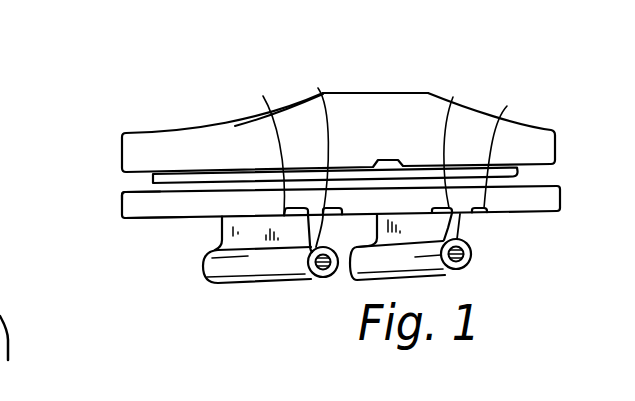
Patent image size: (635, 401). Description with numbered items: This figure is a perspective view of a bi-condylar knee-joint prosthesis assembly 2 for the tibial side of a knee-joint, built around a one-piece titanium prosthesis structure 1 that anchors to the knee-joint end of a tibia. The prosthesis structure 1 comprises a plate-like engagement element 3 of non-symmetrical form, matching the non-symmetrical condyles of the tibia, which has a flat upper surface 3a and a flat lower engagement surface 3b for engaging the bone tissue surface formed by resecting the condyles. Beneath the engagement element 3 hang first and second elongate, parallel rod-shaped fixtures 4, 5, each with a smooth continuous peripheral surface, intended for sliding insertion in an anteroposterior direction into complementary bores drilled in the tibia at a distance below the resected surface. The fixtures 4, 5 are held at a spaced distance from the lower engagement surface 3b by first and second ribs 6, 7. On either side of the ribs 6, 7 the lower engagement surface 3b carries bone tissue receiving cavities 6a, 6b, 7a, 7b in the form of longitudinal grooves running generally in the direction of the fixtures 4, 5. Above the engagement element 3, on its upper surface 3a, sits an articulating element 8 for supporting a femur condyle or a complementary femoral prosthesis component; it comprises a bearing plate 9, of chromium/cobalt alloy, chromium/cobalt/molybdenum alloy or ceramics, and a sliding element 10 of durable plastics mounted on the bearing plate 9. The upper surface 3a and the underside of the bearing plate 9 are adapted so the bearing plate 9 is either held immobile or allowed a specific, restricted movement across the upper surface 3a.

The prosthesis structure 1 is at (572, 194).
The knee-joint prosthesis assembly 2 is at (77, 168).
The plate-like engagement element 3 is at (130, 207).
The upper surface 3a is at (122, 190).
The lower engagement surface 3b is at (156, 218).
The first rod-shaped fixture 4 is at (278, 267).
The second rod-shaped fixture 5 is at (426, 258).
The first rib 6 is at (316, 219).
The bone tissue receiving cavity 6a is at (264, 141).
The bone tissue receiving cavity 6b is at (309, 141).
The second rib 7 is at (465, 218).
The bone tissue receiving cavity 7a is at (453, 137).
The bone tissue receiving cavity 7b is at (510, 151).
The articulating element 8 is at (477, 114).
The bearing plate 9 is at (522, 177).
The sliding element 10 is at (363, 116).